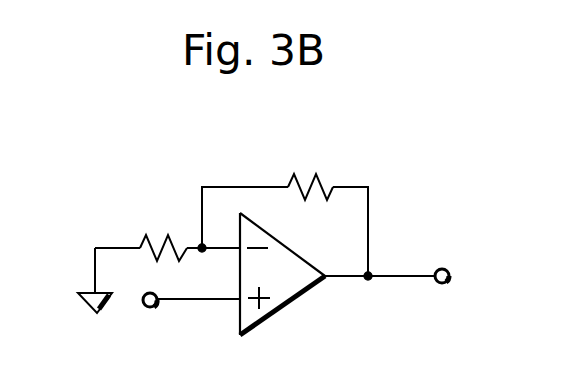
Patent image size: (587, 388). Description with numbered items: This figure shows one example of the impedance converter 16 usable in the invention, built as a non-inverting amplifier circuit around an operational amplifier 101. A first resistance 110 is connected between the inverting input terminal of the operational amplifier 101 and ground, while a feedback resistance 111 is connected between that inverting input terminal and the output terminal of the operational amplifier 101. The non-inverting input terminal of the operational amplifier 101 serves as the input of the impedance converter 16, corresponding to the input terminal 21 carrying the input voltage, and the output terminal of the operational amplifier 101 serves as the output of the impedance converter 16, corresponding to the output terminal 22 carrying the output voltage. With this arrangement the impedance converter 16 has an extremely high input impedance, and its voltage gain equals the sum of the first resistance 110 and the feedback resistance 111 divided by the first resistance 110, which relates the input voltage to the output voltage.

The impedance converter 16 is at (372, 132).
The resistance (R10) 110 is at (140, 238).
The feedback resistance (R11) 111 is at (290, 177).
The operational amplifier 101 is at (287, 248).
The input terminal 21 is at (147, 313).
The output terminal 22 is at (440, 267).